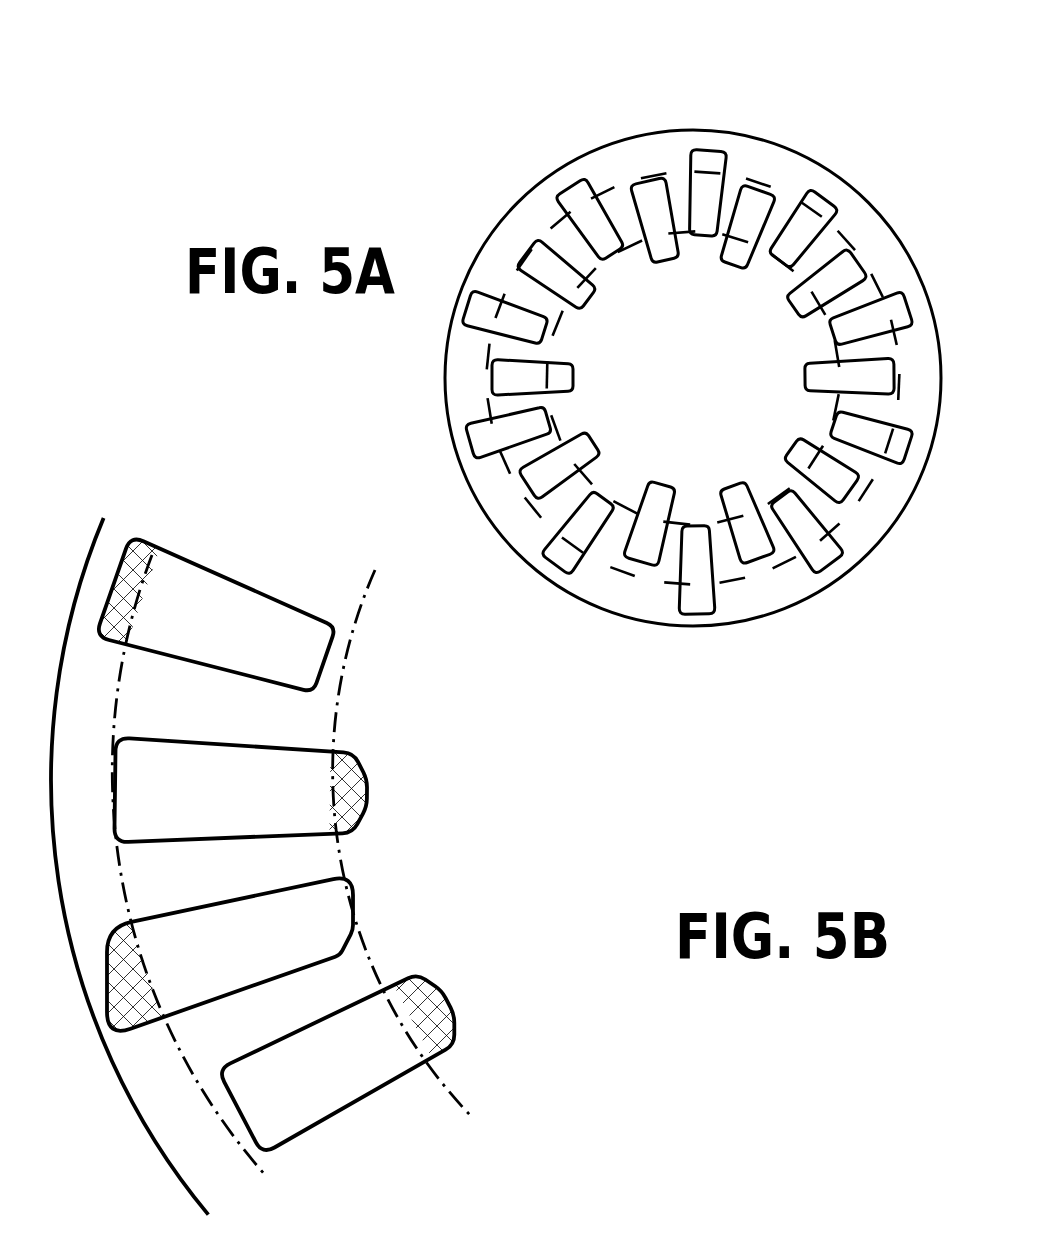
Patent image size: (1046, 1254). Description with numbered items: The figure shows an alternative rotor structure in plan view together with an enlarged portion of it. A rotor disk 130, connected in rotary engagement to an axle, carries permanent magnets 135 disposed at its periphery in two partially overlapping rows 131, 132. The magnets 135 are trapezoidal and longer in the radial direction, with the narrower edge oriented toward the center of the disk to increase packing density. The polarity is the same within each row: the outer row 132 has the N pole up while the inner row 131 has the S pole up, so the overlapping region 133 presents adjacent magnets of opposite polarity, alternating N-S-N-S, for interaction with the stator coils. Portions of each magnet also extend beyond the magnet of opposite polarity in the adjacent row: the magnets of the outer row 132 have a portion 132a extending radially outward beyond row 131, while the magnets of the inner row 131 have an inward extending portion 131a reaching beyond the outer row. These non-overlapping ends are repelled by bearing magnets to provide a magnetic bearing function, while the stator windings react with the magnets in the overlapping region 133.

In FIG. 5A, the rotor disk 130 is at (452, 175).
In FIG. 5A, the inner row of permanent magnets 131 is at (620, 300).
In FIG. 5B, the recess of rotor core 131a is at (368, 768).
In FIG. 5A, the outer row of permanent magnets 132 is at (592, 175).
In FIG. 5B, the outer row of permanent magnets 132 is at (260, 563).
In FIG. 5B, the outward extending portion 132a is at (147, 983).
In FIG. 5B, the overlapping region 133 is at (210, 893).
In FIG. 5A, the permanent magnets 135 is at (820, 141).